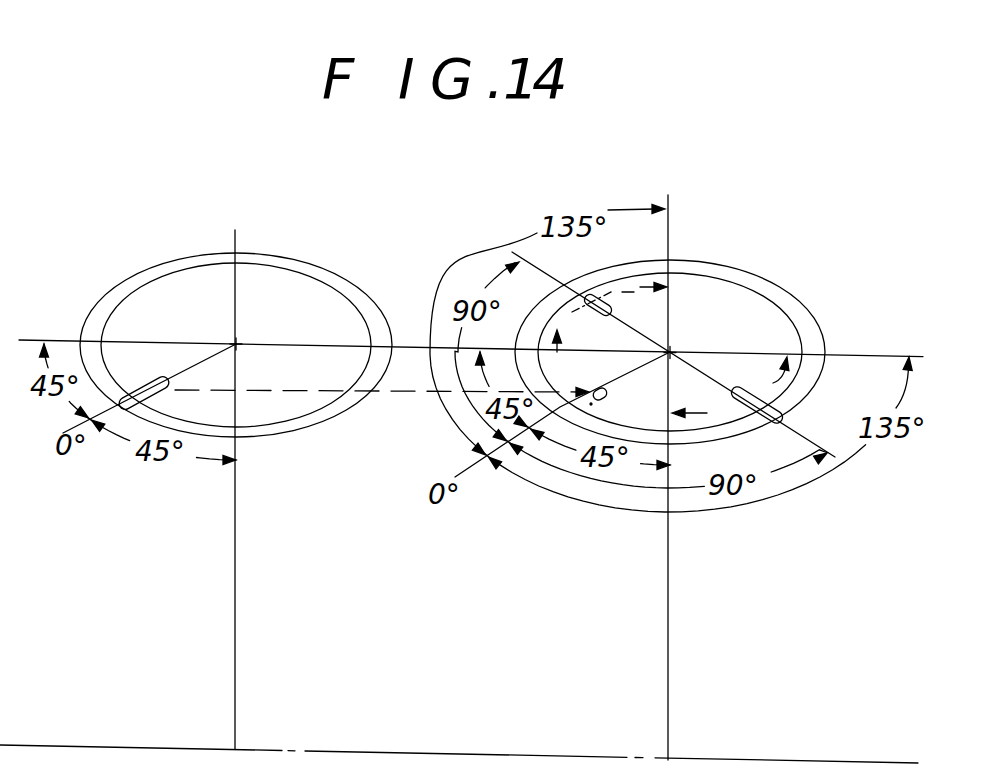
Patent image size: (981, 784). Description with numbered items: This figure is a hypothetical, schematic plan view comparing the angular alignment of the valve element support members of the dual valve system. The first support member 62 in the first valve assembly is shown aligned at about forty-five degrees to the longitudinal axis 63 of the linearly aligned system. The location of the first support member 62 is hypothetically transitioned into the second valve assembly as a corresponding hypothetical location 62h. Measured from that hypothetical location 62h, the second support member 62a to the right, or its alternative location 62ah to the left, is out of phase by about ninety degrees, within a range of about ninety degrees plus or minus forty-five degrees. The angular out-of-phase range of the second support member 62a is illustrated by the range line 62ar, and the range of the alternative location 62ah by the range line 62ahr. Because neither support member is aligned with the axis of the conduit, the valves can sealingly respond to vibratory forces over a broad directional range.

The longitudinal axis 63 is at (204, 343).
The first support member 62 is at (154, 382).
The range line 62ahr is at (630, 292).
The second support member alternative location 62ah is at (575, 316).
The range line 62ar is at (773, 383).
The second support member 62a is at (732, 396).
The hypothetical location 62h is at (628, 406).